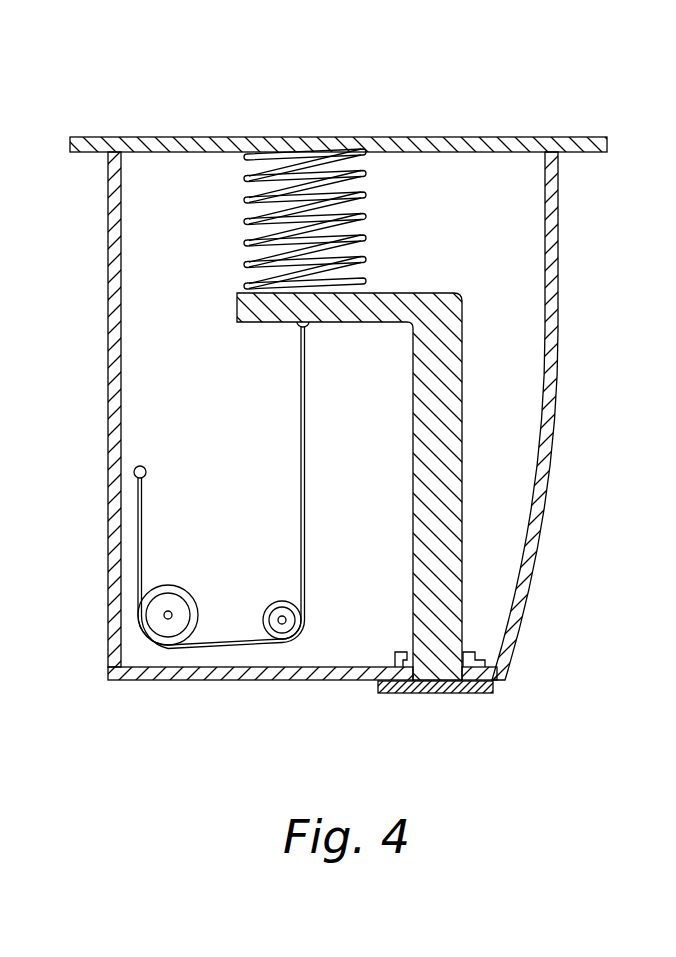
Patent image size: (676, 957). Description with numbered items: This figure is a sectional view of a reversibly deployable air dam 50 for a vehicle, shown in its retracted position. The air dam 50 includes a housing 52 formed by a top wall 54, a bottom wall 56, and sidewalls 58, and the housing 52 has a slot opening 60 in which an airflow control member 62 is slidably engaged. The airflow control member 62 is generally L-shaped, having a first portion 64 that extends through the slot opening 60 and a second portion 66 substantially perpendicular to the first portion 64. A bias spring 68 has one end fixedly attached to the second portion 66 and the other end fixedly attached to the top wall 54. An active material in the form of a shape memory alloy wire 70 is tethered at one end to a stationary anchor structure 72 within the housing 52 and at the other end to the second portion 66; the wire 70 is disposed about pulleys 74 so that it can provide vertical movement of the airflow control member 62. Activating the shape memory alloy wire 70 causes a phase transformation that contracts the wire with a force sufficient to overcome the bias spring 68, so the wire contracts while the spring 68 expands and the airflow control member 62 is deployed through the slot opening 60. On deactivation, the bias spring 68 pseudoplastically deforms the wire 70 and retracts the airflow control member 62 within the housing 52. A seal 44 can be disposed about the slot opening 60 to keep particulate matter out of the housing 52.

The seal 44 is at (459, 693).
The air dam 50 is at (440, 119).
The housing 52 is at (98, 397).
The top wall 54 is at (183, 137).
The bottom wall 56 is at (224, 681).
The sidewalls 58 is at (108, 283).
The slot opening 60 is at (462, 667).
The airflow control member 62 is at (470, 338).
The first portion 64 is at (462, 490).
The second portion 66 is at (387, 293).
The bias spring 68 is at (250, 221).
The shape memory alloy wire 70 is at (138, 548).
The stationary anchor structure 72 is at (134, 472).
The pulleys 74 is at (153, 615).